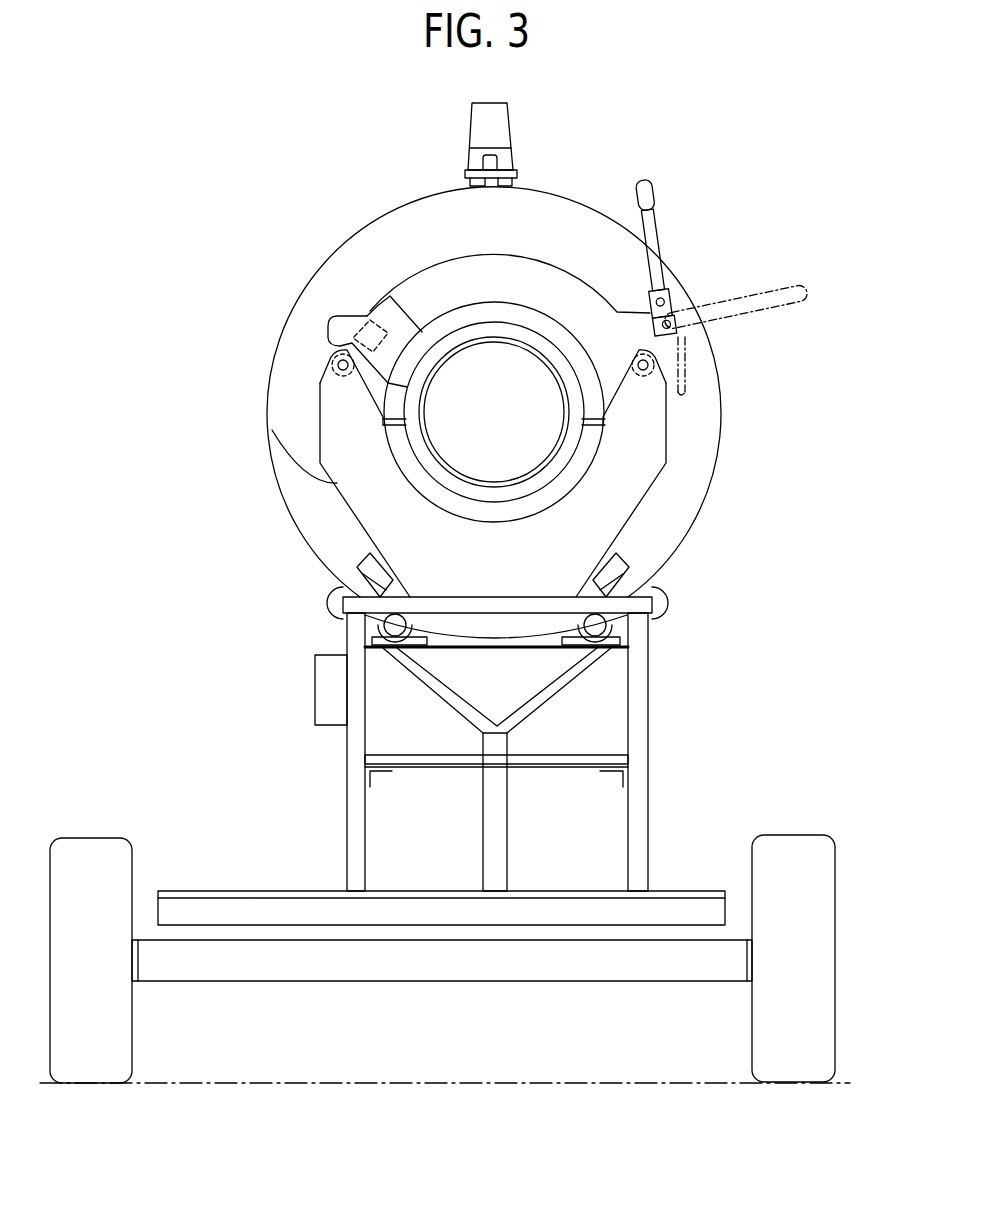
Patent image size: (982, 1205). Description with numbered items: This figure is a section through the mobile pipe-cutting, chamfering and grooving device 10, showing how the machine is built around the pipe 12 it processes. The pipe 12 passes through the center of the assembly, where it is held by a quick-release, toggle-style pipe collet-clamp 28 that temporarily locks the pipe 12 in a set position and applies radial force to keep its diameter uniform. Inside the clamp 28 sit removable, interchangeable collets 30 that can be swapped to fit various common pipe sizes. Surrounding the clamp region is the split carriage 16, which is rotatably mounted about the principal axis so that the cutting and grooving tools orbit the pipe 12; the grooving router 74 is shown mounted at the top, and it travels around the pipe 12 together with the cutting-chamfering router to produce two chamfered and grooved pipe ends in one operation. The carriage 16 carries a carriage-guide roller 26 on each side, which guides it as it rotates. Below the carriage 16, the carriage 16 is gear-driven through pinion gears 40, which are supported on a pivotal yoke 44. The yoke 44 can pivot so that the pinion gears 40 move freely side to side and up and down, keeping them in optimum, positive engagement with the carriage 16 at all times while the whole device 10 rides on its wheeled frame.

The mobile device 10 is at (205, 72).
The pipe 12 is at (423, 433).
The split carriage 16 is at (683, 498).
The carriage-guide roller 26 is at (367, 563).
The pipe collet-clamp 28 is at (645, 180).
The collets 30 is at (452, 337).
The pinion gears 40 is at (378, 622).
The pivotal yoke 44 is at (550, 693).
The grooving router 74 is at (497, 128).